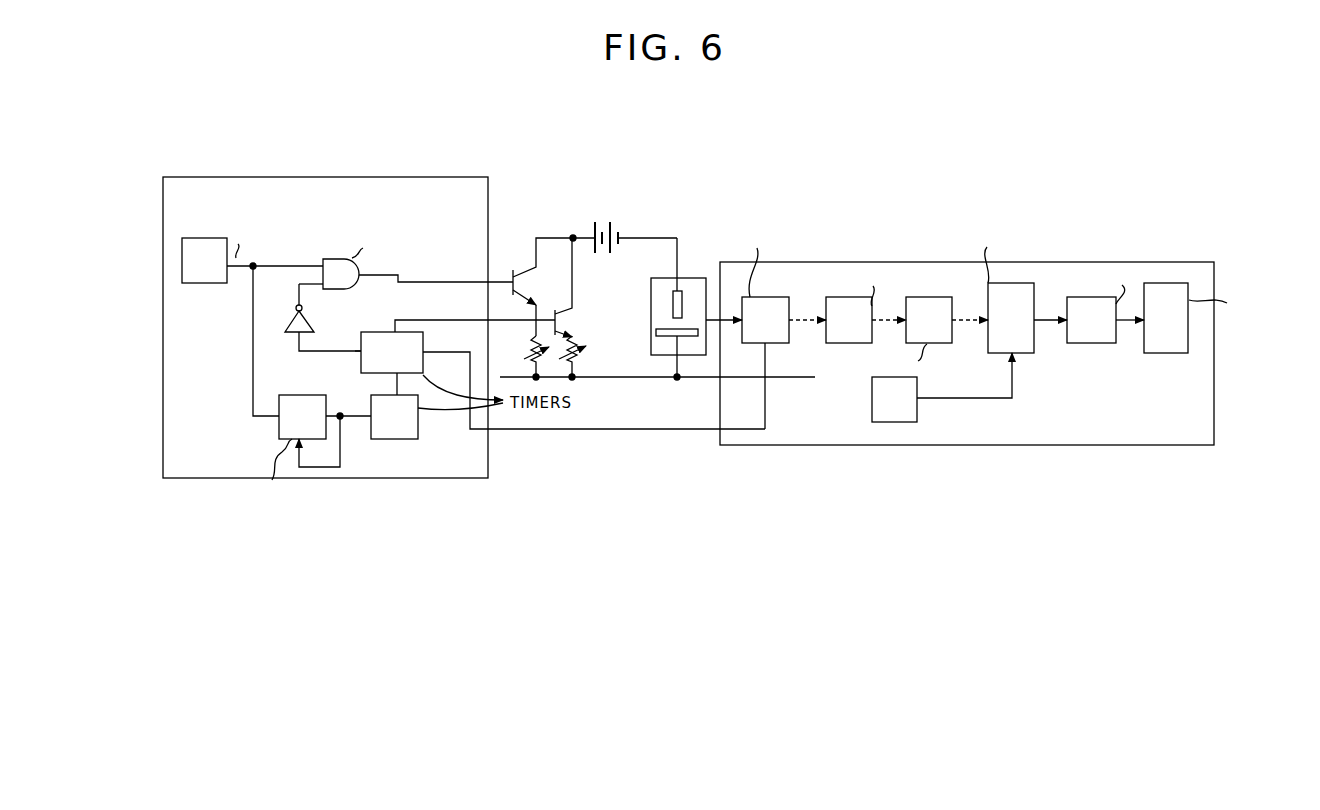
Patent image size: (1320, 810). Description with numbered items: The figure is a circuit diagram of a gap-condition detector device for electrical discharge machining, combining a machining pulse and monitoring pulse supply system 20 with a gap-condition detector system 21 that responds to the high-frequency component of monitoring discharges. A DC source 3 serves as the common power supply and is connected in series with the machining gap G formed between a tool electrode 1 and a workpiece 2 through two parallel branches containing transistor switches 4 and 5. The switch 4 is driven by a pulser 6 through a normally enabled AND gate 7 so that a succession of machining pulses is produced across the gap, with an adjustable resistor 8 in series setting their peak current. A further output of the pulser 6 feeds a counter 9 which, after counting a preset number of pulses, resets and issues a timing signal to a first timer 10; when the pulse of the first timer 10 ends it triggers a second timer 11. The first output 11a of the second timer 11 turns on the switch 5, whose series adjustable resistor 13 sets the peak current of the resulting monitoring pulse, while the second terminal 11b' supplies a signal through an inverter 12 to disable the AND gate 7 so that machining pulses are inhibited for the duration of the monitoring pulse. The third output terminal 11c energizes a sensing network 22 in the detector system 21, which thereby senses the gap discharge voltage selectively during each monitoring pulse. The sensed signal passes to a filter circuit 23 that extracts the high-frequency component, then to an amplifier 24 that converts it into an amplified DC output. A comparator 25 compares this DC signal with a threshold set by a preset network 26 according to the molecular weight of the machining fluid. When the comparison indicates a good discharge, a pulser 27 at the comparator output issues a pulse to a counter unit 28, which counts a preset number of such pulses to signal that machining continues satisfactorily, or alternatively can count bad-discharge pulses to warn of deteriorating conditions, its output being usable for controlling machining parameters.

The tool electrode 1 is at (680, 291).
The workpiece 2 is at (667, 338).
The DC source 3 is at (603, 222).
The switching element 4 is at (521, 265).
The switching element 5 is at (568, 318).
The pulser 6 is at (222, 238).
The AND gate 7 is at (338, 258).
The adjustable resistor 8 is at (528, 344).
The counter 9 is at (279, 423).
The first timer 10 is at (418, 415).
The second timer 11 is at (424, 370).
The first output of the timer 11a is at (392, 332).
The second terminal of the timer 11b' is at (334, 366).
The third output terminal of the timer 11c is at (425, 352).
The inverter 12 is at (313, 318).
The adjustable resistor 13 is at (581, 348).
The machining pulse and monitoring pulse supply system 20 is at (355, 177).
The gap-condition detector system 21 is at (920, 262).
The sensing network 22 is at (780, 297).
The filter circuit 23 is at (847, 343).
The amplifier 24 is at (947, 343).
The comparator 25 is at (1035, 343).
The preset network 26 is at (872, 388).
The pulser 27 is at (1105, 343).
The counter unit 28 is at (1165, 353).